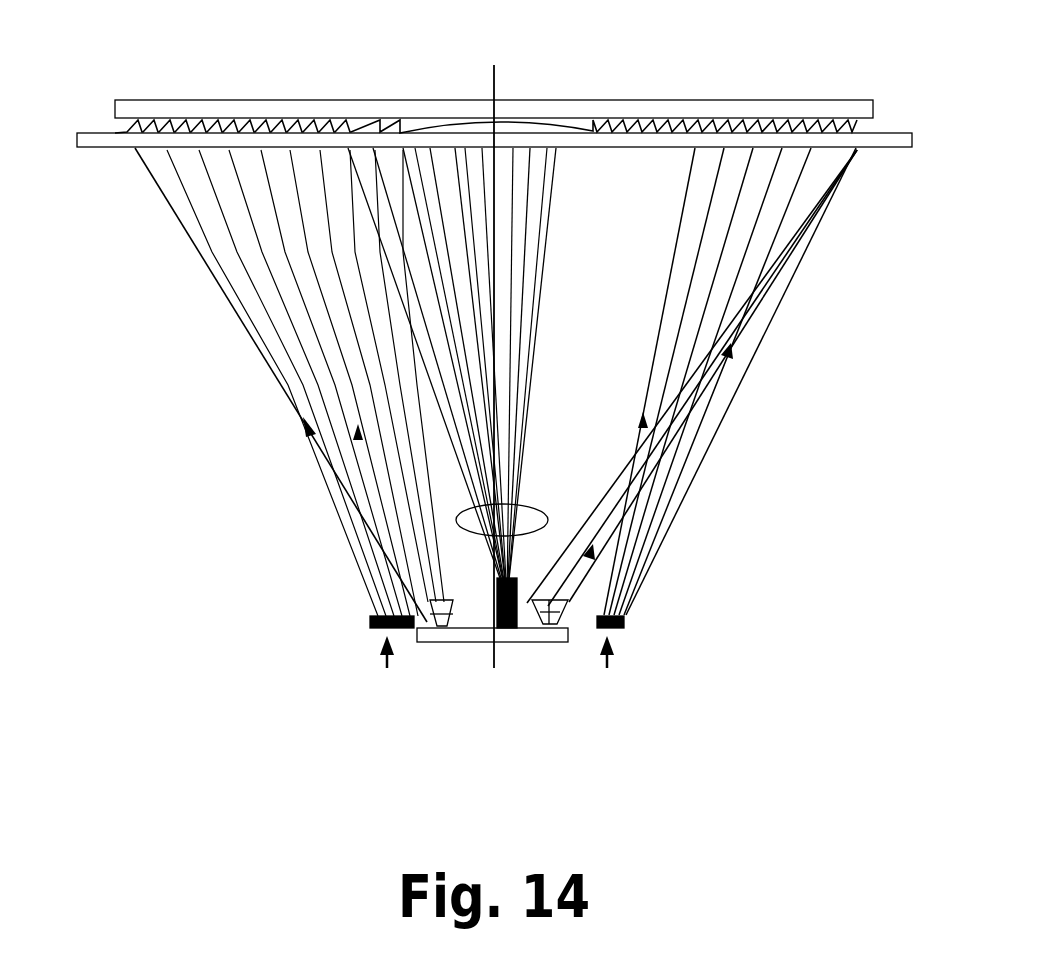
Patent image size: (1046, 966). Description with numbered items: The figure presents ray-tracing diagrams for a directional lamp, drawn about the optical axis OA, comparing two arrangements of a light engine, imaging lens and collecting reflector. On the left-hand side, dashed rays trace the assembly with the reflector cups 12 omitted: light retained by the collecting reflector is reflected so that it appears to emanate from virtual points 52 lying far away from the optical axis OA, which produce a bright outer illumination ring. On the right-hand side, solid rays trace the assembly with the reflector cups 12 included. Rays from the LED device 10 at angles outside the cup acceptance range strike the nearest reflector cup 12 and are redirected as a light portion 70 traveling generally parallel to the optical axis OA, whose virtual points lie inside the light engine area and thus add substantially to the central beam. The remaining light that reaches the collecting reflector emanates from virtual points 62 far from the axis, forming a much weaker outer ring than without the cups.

The LED device 10 is at (492, 626).
The reflector cups 12 is at (509, 605).
The virtual points 52 is at (392, 661).
The virtual points 62 is at (610, 661).
The light portion 70 is at (548, 512).
The optical axis OA is at (494, 92).